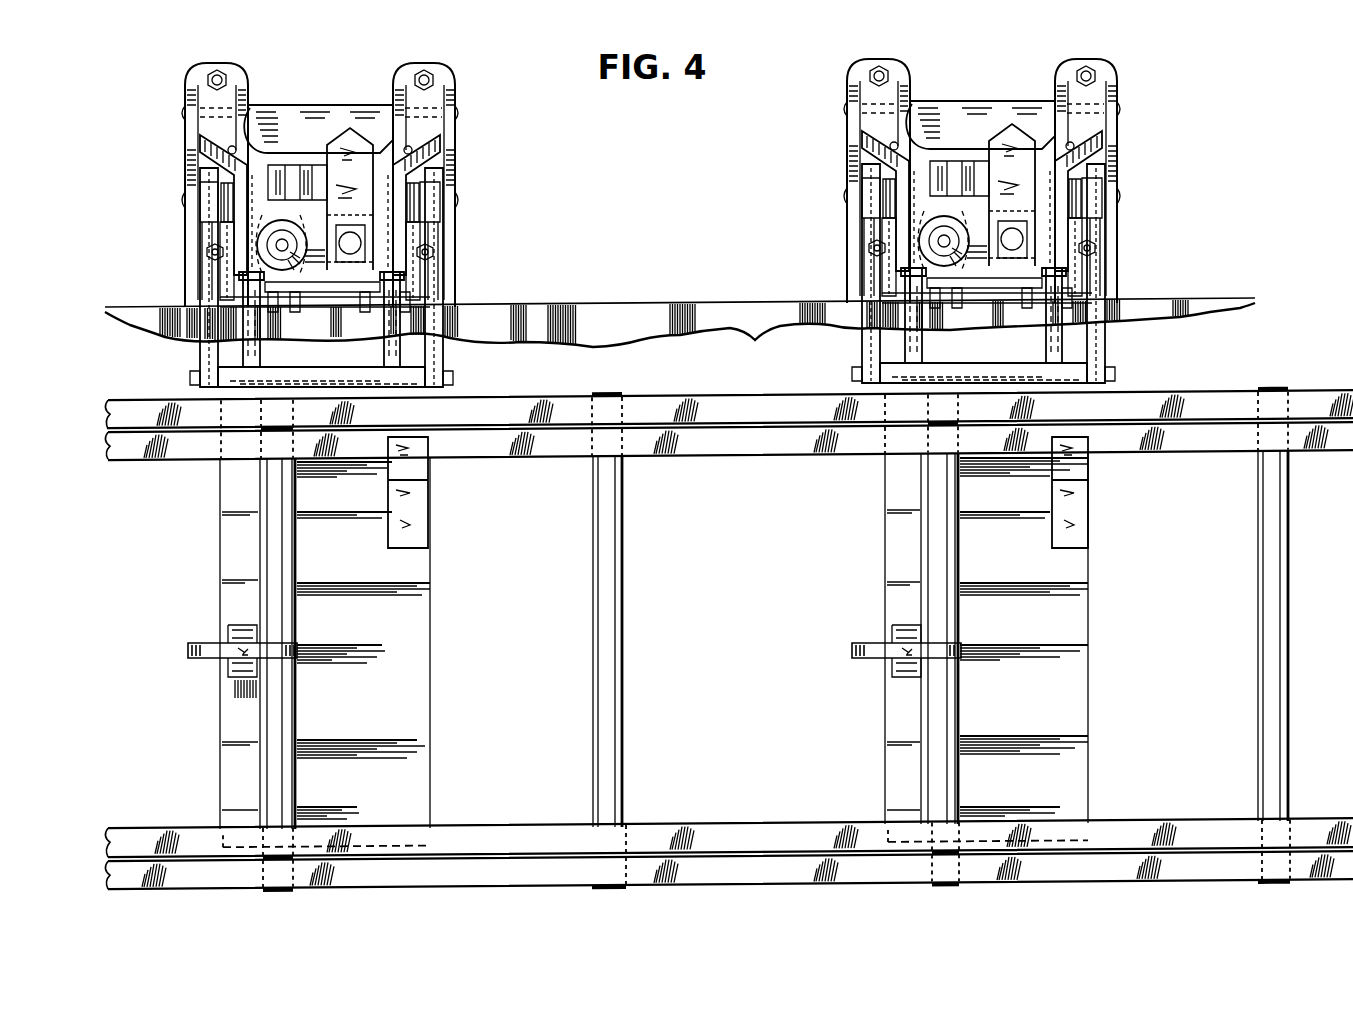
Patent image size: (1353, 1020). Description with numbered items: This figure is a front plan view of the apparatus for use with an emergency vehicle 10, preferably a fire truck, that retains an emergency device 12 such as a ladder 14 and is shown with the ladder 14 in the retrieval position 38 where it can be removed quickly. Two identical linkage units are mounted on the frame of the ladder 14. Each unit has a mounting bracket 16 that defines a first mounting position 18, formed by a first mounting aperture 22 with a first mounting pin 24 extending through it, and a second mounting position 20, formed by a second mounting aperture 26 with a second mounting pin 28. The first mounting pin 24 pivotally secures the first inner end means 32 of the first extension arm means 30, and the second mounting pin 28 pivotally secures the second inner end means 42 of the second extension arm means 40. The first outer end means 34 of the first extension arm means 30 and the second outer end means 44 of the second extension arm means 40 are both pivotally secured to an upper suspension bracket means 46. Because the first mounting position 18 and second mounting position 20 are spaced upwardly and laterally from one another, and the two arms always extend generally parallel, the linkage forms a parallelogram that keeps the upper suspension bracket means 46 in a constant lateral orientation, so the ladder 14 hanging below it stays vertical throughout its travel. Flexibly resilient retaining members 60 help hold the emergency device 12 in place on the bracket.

The emergency vehicle 10 is at (612, 332).
The emergency device 12 is at (197, 870).
The ladder 14 is at (1308, 391).
The mounting bracket 16 is at (328, 108).
The first mounting position 18 is at (452, 110).
The second mounting position 20 is at (188, 200).
The first mounting aperture 22 is at (186, 113).
The first mounting pin 24 is at (190, 97).
The second mounting aperture 26 is at (464, 187).
The second mounting pin 28 is at (458, 202).
The first extension arm means 30 is at (262, 150).
The first inner end means 32 is at (230, 150).
The first outer end means 34 is at (215, 318).
The retrieval position 38 is at (710, 616).
The second extension arm means 40 is at (210, 262).
The second inner end means 42 is at (222, 213).
The second outer end means 44 is at (205, 350).
The upper suspension bracket means 46 is at (455, 393).
The flexibly resilient retaining member 60 is at (198, 643).